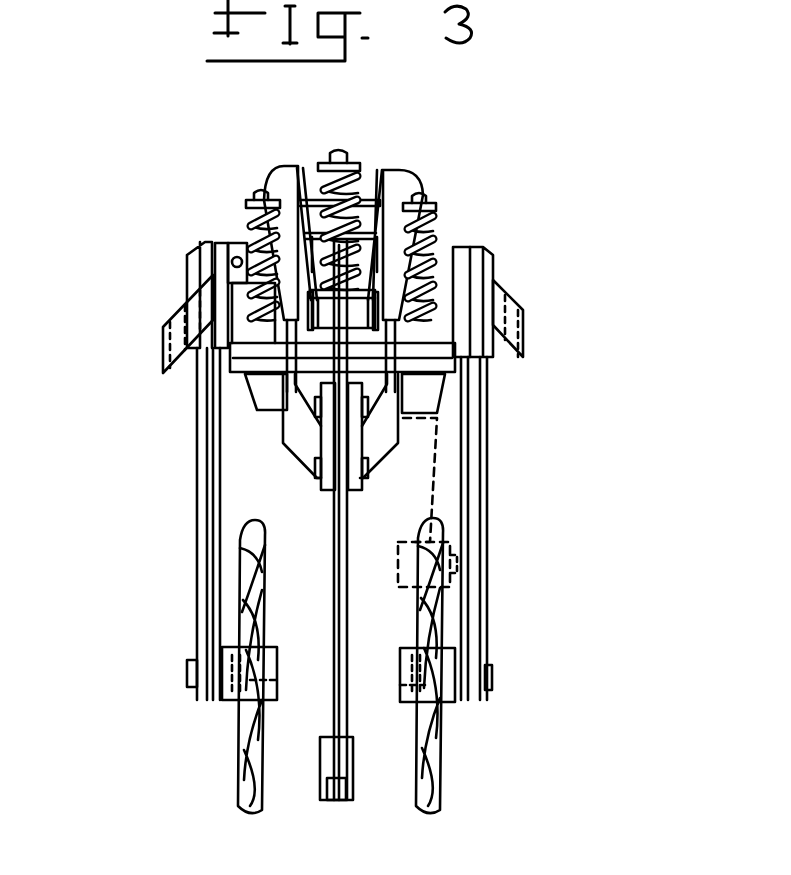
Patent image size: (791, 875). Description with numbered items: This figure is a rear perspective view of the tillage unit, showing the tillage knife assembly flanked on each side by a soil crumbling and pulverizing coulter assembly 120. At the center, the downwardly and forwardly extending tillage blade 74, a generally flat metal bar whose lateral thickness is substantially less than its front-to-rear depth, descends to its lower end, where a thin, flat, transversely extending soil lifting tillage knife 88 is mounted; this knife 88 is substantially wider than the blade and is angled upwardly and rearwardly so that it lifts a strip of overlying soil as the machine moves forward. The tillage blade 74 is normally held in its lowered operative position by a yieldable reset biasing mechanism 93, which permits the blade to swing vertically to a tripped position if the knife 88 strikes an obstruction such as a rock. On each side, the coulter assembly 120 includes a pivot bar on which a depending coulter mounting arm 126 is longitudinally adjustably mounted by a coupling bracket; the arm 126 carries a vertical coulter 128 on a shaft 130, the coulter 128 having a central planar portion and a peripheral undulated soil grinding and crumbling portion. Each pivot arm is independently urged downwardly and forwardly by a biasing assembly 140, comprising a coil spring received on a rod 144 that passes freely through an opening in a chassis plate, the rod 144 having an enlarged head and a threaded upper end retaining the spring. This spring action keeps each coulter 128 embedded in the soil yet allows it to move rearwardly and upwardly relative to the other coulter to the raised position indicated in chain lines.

The tillage blade 74 is at (345, 700).
The tillage knife 88 is at (350, 770).
The yieldable reset biasing mechanism 93 is at (247, 201).
The coulter assembly 120 is at (535, 601).
The coulter mounting arm 126 is at (197, 518).
The coulter 128 is at (245, 765).
The shaft 130 is at (187, 668).
The biasing assembly 140 is at (486, 221).
The rod 144 is at (425, 195).